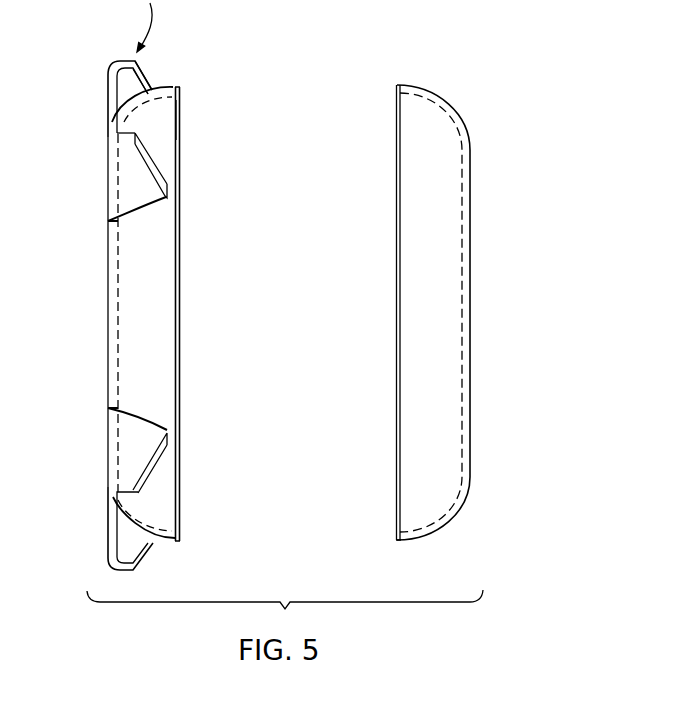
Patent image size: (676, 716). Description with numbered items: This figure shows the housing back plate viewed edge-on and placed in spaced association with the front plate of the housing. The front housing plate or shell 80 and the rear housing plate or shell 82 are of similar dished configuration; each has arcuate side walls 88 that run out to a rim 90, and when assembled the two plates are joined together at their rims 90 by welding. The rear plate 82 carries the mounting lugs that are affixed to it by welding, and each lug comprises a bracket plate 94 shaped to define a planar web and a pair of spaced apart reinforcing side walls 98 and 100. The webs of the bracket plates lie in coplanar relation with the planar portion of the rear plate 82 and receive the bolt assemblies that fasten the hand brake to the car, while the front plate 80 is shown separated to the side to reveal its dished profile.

The front housing plate or shell 80 is at (430, 133).
The rear housing plate or shell 82 is at (107, 253).
The arcuate side wall 88 is at (153, 120).
The rim 90 is at (180, 126).
The bracket plate 94 is at (111, 62).
The reinforcing side wall 98 is at (142, 187).
The reinforcing side wall 100 is at (150, 73).